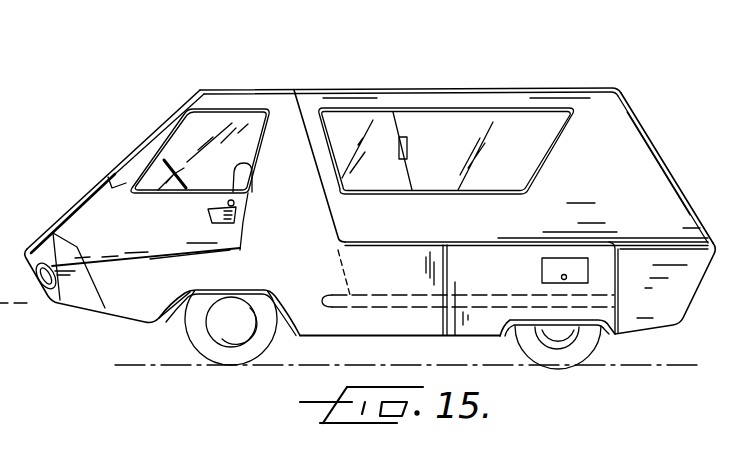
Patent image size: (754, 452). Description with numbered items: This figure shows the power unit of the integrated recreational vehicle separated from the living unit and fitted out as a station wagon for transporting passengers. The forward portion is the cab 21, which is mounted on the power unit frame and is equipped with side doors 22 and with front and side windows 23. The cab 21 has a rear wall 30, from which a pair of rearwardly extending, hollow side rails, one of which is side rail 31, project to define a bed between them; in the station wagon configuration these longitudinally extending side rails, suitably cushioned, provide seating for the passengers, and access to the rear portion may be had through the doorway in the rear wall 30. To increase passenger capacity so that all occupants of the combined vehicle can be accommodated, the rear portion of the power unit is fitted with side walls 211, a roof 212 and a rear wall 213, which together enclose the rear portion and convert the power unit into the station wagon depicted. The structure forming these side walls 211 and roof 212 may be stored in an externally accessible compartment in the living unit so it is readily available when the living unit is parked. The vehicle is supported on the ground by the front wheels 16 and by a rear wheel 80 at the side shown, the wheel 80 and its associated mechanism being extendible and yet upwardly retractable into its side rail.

The front wheels 16 is at (218, 357).
The cab 21 is at (113, 170).
The side doors 22 is at (175, 242).
The front and side windows 23 is at (180, 146).
The rear wall 30 is at (300, 106).
The side rail 31 is at (477, 253).
The wheel 80 is at (583, 350).
The side walls 211 is at (593, 204).
The roof 212 is at (521, 90).
The rear wall 213 is at (654, 146).